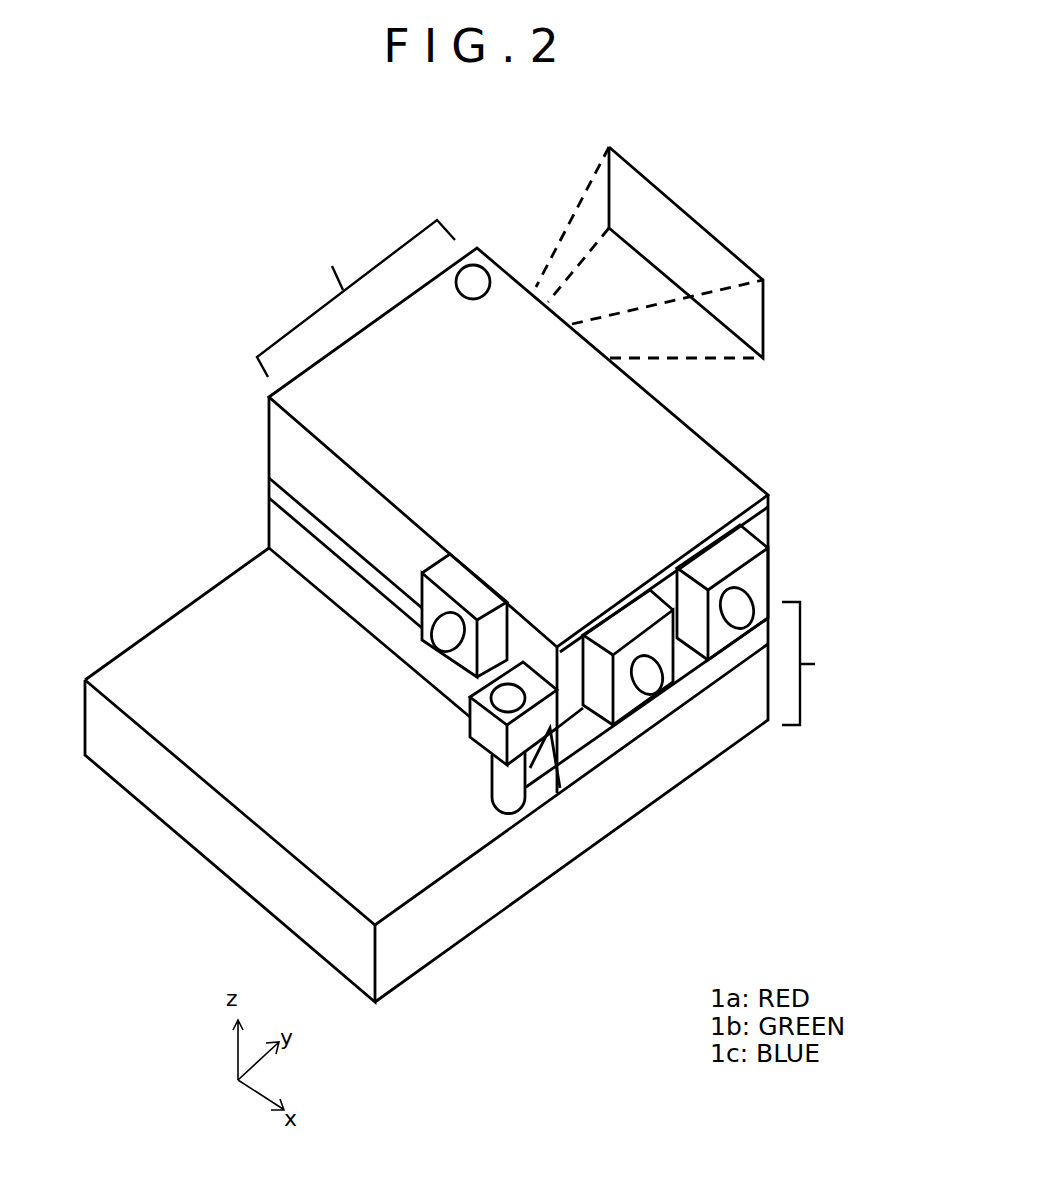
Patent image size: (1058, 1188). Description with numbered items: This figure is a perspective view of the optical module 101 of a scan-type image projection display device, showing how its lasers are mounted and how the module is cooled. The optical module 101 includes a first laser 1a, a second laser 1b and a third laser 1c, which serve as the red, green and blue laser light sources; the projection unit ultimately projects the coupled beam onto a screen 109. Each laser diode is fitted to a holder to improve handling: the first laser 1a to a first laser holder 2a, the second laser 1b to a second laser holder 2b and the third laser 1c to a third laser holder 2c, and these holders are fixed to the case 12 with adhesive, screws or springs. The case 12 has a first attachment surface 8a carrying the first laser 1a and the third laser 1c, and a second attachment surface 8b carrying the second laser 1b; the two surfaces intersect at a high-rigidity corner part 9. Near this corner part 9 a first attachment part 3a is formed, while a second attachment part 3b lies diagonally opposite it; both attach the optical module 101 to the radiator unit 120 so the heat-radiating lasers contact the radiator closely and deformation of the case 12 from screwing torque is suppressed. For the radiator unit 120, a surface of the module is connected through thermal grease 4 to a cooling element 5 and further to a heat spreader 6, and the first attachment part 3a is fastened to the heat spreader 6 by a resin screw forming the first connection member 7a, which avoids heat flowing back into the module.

The case 12 is at (278, 424).
The optical module 101 is at (356, 298).
The second attachment part 3b is at (470, 276).
The screen 109 is at (649, 252).
The second attachment surface 8b is at (405, 561).
The first attachment surface 8a is at (742, 524).
The thermal grease 4 is at (580, 720).
The cooling element 5 is at (722, 663).
The second laser holder 2b is at (463, 665).
The second laser 1b is at (445, 641).
The corner part 9 is at (556, 667).
The first attachment part 3a is at (508, 705).
The first connection member 7a is at (504, 780).
The third laser holder 2c is at (668, 673).
The third laser 1c is at (647, 675).
The first laser holder 2a is at (753, 562).
The first laser 1a is at (735, 607).
The radiator unit 120 is at (825, 663).
The heat spreader 6 is at (423, 939).